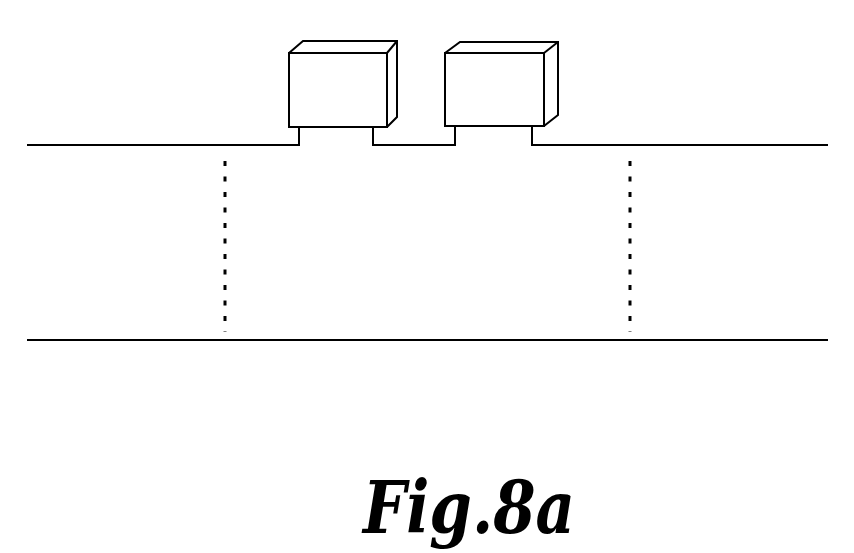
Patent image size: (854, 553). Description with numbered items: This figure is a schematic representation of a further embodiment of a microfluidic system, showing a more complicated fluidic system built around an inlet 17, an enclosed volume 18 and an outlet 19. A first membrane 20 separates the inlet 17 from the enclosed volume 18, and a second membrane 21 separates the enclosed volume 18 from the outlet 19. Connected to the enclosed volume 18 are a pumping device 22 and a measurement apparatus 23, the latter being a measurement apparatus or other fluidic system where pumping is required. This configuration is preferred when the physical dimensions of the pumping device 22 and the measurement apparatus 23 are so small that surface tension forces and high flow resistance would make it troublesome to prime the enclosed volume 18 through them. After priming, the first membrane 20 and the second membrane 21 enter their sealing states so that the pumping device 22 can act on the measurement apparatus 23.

The inlet 17 is at (126, 242).
The enclosed volume 18 is at (427, 233).
The outlet 19 is at (729, 242).
The first membrane 20 is at (216, 131).
The second membrane 21 is at (638, 129).
The pumping device 22 is at (343, 84).
The measurement apparatus 23 is at (501, 84).